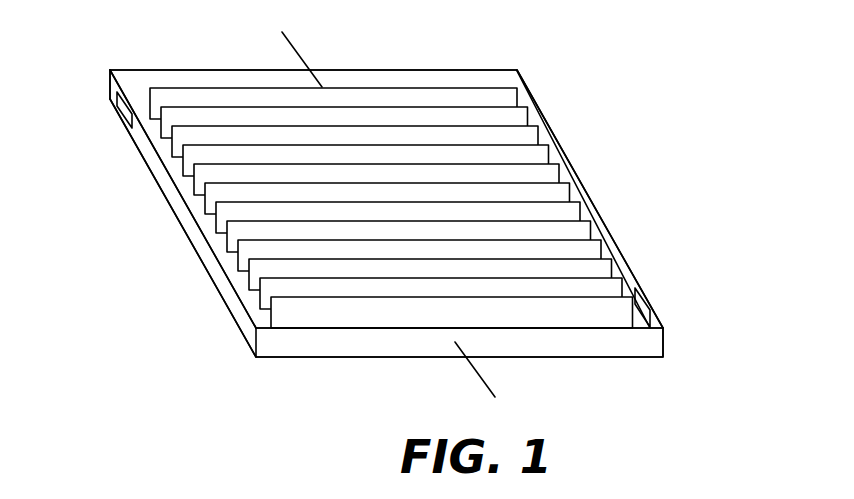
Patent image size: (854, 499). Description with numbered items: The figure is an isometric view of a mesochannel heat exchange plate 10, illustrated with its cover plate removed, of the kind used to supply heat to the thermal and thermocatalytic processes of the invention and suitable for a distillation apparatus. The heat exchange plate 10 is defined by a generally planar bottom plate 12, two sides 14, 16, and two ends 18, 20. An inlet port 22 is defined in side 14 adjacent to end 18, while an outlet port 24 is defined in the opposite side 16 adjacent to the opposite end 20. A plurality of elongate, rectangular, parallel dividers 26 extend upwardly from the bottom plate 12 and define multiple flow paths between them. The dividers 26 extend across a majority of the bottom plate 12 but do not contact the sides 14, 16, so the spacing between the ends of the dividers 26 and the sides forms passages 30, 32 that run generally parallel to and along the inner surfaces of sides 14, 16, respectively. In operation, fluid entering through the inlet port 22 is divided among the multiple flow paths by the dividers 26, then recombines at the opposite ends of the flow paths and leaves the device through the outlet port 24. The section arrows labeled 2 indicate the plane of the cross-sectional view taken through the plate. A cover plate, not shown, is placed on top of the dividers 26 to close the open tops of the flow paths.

The heat exchange plate 10 is at (228, 322).
The bottom plate 12 is at (300, 358).
The side 14 is at (198, 238).
The side 16 is at (595, 210).
The end 18 is at (190, 76).
The end 20 is at (387, 346).
The inlet port 22 is at (123, 113).
The outlet port 24 is at (647, 302).
The parallel dividers 26 is at (535, 285).
The passage 30 is at (162, 148).
The passage 32 is at (565, 170).
The section line 2- 2 is at (262, 48).